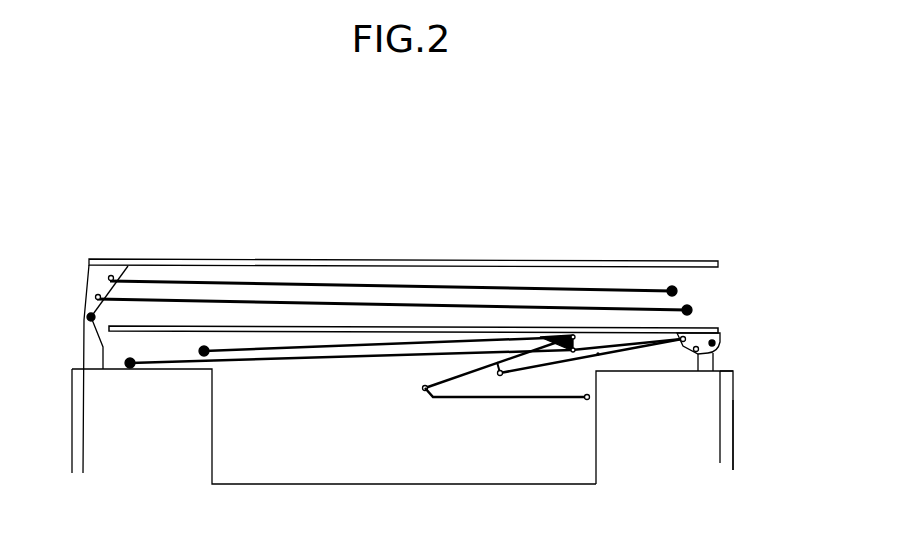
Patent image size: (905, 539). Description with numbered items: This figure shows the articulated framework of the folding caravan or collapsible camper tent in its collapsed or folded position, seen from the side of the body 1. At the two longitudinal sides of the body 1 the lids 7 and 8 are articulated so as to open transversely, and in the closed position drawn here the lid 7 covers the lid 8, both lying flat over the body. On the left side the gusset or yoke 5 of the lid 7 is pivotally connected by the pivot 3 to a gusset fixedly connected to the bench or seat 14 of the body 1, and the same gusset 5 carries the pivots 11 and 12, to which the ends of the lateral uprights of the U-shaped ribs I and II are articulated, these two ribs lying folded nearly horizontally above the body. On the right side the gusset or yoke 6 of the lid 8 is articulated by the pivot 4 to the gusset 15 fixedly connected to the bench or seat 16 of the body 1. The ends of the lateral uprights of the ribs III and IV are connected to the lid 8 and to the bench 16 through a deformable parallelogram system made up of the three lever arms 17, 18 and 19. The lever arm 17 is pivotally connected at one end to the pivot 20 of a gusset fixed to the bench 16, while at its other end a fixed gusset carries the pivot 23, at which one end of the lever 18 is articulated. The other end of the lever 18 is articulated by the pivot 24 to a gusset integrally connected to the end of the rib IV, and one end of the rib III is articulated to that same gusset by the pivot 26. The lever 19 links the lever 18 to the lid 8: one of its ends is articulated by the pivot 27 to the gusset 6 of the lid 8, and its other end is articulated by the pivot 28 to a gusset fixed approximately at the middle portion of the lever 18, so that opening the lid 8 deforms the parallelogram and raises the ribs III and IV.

The body 1 is at (733, 452).
The pivot 3 is at (88, 320).
The pivot 4 is at (722, 342).
The gusset 5 is at (88, 283).
The gusset 6 is at (703, 333).
The lid 7 is at (450, 260).
The lid 8 is at (277, 327).
The pivot 11 is at (111, 276).
The pivot 12 is at (96, 298).
The bench or seat 14 is at (334, 426).
The gusset 15 is at (720, 372).
The bench or seat 16 is at (664, 427).
The lever arm 17 is at (530, 399).
The lever 18 is at (466, 372).
The lever 19 is at (590, 355).
The pivot 20 is at (587, 400).
The pivot 23 is at (426, 391).
The pivot 24 is at (573, 336).
The pivot 26 is at (600, 352).
The pivot 27 is at (699, 356).
The pivot 28 is at (498, 378).
The rib I is at (556, 287).
The rib II is at (345, 301).
The rib III is at (233, 362).
The rib IV is at (338, 360).